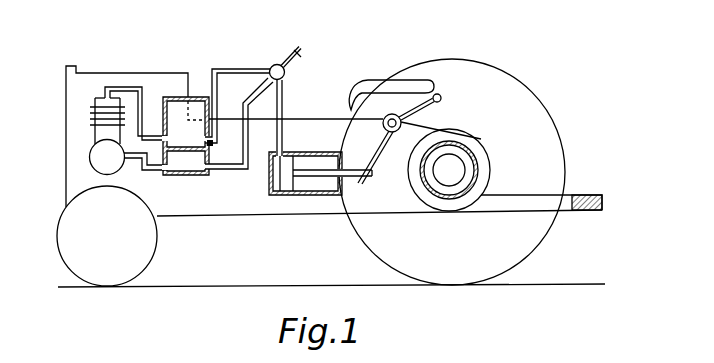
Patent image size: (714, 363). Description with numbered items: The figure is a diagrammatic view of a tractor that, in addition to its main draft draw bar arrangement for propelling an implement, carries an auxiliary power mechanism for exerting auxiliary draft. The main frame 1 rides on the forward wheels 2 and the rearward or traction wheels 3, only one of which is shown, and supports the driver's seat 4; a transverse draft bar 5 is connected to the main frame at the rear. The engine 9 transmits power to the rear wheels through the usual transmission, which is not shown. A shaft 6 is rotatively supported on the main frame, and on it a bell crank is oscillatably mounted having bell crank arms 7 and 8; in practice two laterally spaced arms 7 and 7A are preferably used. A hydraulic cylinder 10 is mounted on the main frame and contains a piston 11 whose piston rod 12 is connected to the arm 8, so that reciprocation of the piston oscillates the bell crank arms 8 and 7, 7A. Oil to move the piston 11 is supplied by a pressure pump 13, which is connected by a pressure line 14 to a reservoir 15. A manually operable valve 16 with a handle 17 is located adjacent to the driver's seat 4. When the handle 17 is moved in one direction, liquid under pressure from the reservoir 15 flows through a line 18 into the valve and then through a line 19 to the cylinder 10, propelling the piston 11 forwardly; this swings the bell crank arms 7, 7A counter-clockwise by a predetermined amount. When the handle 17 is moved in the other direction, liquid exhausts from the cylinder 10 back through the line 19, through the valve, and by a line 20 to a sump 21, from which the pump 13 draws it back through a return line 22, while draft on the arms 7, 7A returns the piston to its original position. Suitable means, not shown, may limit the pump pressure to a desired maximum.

The main frame 1 is at (231, 216).
The forward wheels 2 is at (157, 247).
The rearward or traction wheels 3 is at (363, 238).
The driver's seat 4 is at (370, 82).
The transverse draft bar 5 is at (593, 194).
The shaft 6 is at (383, 125).
The bell crank arm 7 is at (440, 116).
The bell crank arm 7A is at (422, 109).
The bell crank arm 8 is at (377, 153).
The engine 9 is at (66, 136).
The hydraulic cylinder 10 is at (270, 183).
The piston 11 is at (292, 191).
The piston rod 12 is at (330, 174).
The pressure pump 13 is at (93, 158).
The pressure line 14 is at (145, 95).
The reservoir 15 is at (180, 145).
The manually operable valve 16 is at (285, 73).
The handle 17 is at (301, 50).
The line 18 is at (233, 70).
The line 19 is at (282, 102).
The line 20 is at (247, 146).
The sump 21 is at (185, 175).
The return line 22 is at (150, 168).